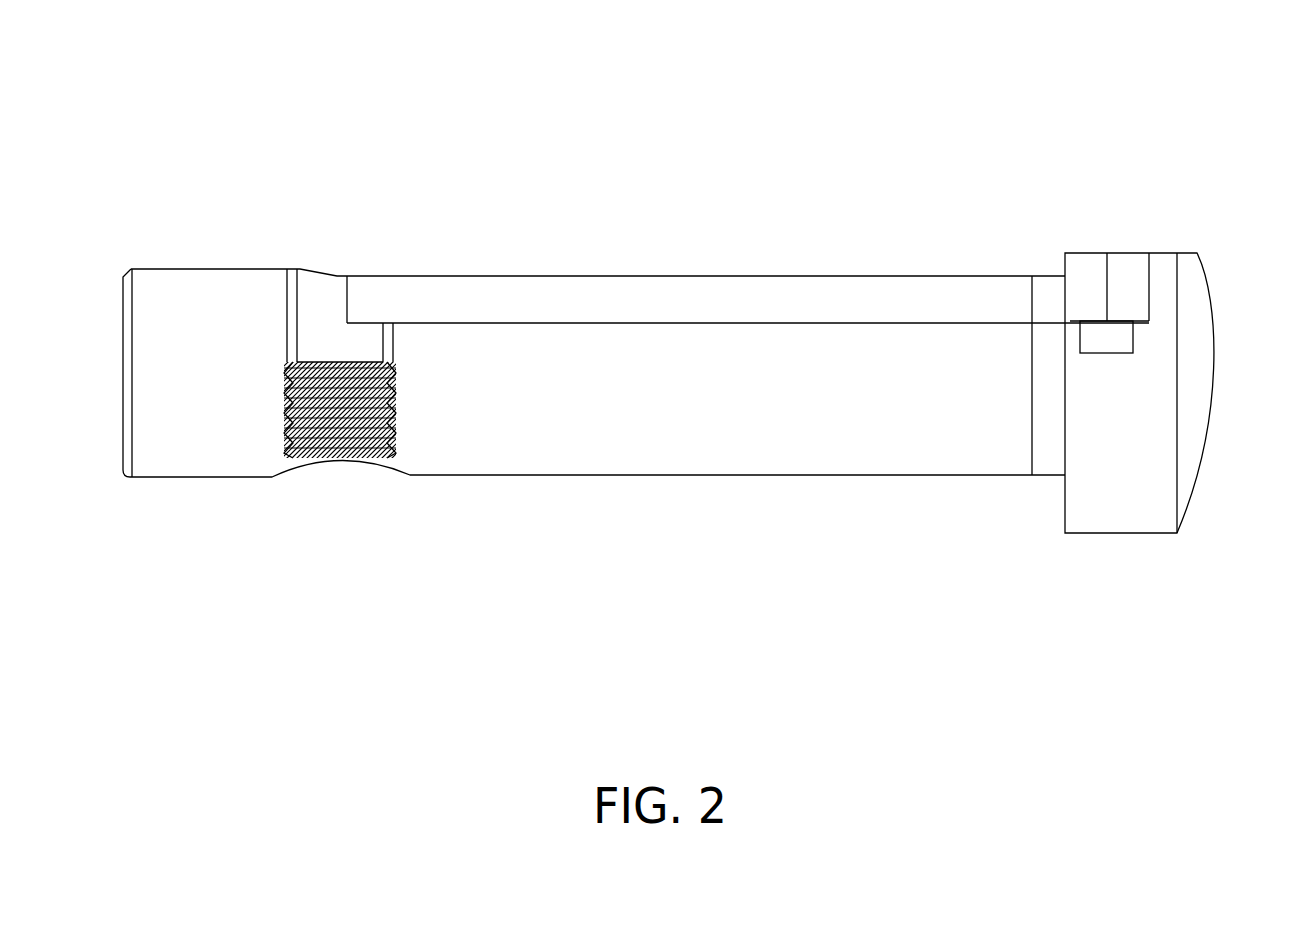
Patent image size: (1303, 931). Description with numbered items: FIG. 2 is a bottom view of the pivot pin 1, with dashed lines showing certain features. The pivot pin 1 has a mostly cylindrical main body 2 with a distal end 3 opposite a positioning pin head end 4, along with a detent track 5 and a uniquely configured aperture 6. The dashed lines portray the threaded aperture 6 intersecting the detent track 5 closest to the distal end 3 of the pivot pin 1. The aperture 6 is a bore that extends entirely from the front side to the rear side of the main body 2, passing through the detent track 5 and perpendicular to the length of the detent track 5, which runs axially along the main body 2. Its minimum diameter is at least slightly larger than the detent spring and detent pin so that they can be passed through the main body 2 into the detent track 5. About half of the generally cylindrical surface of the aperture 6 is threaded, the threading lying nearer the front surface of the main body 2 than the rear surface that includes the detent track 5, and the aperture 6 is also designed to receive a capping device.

The pivot pin 1 is at (557, 230).
The main body 2 is at (553, 400).
The distal end 3 is at (123, 365).
The positioning pin head end 4 is at (1213, 340).
The detent track 5 is at (619, 300).
The aperture 6 is at (356, 462).